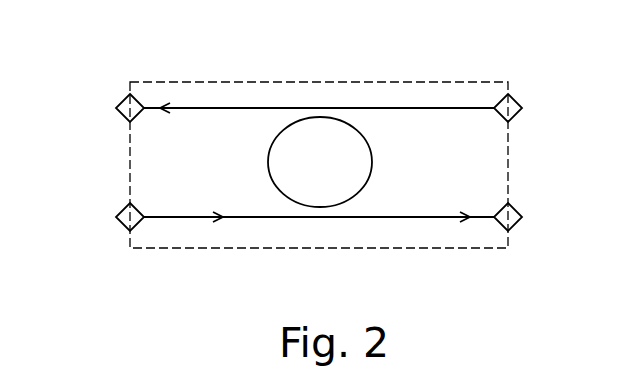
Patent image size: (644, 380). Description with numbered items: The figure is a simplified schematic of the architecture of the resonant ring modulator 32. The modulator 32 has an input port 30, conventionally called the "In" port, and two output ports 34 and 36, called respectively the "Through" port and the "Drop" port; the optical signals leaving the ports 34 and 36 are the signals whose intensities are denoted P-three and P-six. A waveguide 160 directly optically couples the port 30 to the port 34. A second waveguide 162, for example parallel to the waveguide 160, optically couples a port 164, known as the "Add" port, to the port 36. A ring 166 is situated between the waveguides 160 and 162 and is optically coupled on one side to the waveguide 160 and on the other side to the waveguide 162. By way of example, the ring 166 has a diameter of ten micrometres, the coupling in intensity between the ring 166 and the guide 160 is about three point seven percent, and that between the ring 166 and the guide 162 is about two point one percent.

The input port 30 is at (122, 208).
The resonant ring modulator 32 is at (178, 74).
The output port 34 is at (518, 208).
The output port 36 is at (122, 100).
The waveguide 160 is at (300, 217).
The waveguide 162 is at (263, 107).
The port 164 is at (518, 100).
The ring 166 is at (373, 160).